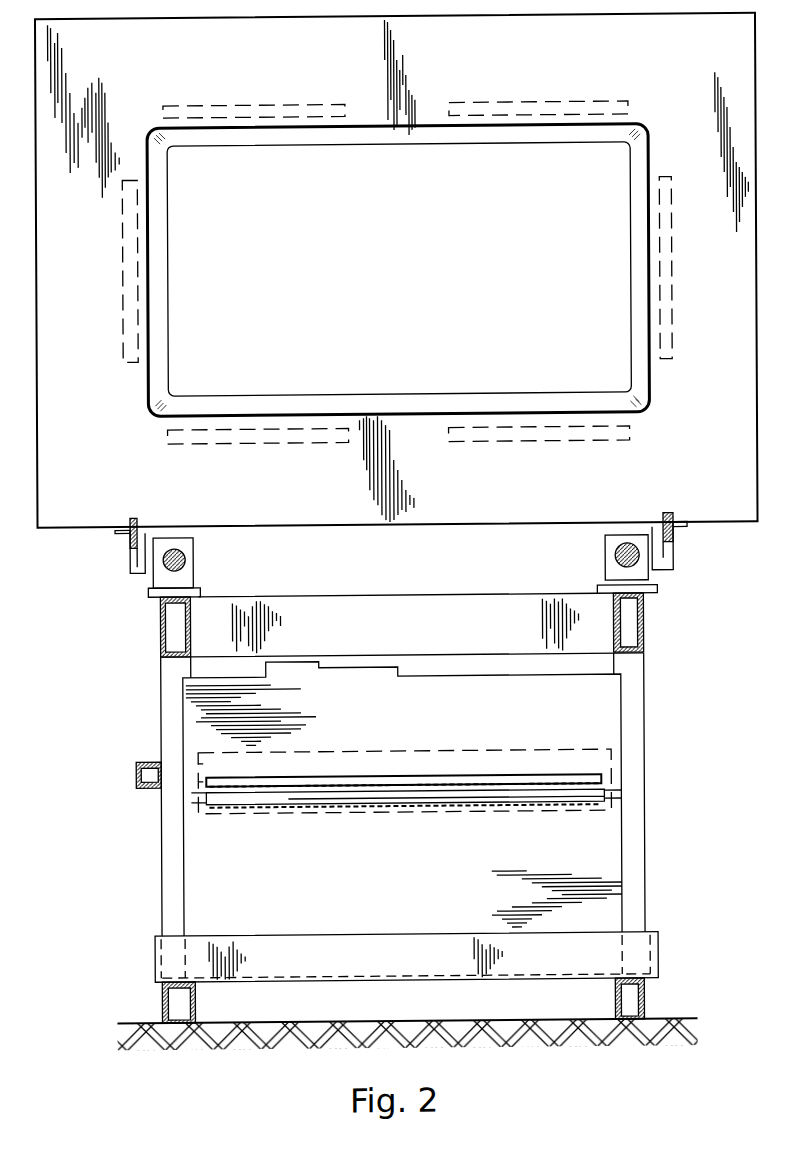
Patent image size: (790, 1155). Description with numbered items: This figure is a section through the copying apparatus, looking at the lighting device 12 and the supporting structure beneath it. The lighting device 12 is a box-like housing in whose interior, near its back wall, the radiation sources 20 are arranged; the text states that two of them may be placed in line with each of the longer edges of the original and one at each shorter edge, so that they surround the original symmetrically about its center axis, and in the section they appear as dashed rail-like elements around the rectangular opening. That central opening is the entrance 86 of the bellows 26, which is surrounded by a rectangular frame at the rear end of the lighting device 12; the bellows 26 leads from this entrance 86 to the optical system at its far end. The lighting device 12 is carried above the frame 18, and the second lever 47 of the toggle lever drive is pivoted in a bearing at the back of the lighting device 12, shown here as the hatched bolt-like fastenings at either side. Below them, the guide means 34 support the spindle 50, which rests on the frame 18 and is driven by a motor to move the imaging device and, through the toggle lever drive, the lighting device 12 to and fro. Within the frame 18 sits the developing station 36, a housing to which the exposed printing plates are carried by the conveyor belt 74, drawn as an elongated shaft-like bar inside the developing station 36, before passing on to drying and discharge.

The lighting device 12 is at (86, 535).
The frame 18 is at (652, 640).
The radiation sources 20 is at (238, 110).
The bellows 26 is at (646, 150).
The guide means 34 is at (195, 571).
The developing station 36 is at (379, 797).
The second lever 47 is at (134, 516).
The spindle 50 is at (170, 566).
The conveyor belt 74 is at (287, 817).
The entrance 86 is at (399, 269).